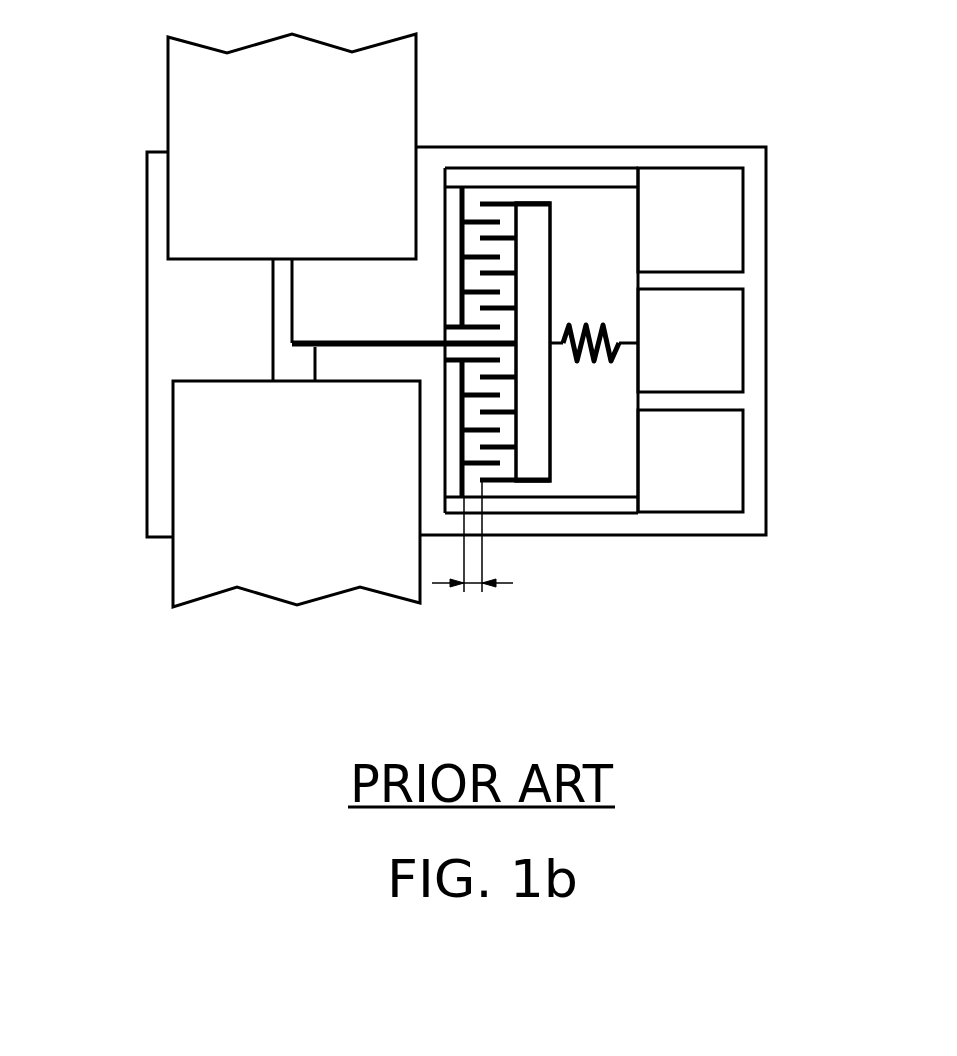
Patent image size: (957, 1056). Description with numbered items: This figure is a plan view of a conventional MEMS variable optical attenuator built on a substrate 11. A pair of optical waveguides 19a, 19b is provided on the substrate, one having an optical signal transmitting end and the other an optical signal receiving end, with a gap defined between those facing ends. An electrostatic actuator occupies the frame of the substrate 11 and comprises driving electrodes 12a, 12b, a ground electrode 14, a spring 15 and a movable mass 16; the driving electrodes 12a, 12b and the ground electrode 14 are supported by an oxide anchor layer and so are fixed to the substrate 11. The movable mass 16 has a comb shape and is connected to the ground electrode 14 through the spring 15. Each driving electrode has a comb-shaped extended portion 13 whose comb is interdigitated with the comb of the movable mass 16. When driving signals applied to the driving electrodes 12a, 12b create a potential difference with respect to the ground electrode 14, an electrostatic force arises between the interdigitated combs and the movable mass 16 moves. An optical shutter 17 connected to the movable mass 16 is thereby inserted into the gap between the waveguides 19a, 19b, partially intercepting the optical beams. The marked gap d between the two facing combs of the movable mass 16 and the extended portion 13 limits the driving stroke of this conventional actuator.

The substrate 11 is at (717, 152).
The driving electrode 12a is at (727, 215).
The driving electrode 12b is at (733, 466).
The extended portion 13 is at (510, 502).
The ground electrode 14 is at (730, 343).
The spring 15 is at (578, 360).
The movable mass 16 is at (530, 217).
The optical shutter 17 is at (300, 349).
The optical waveguide 19a is at (183, 502).
The optical waveguide 19b is at (180, 176).
The gap d is at (482, 595).